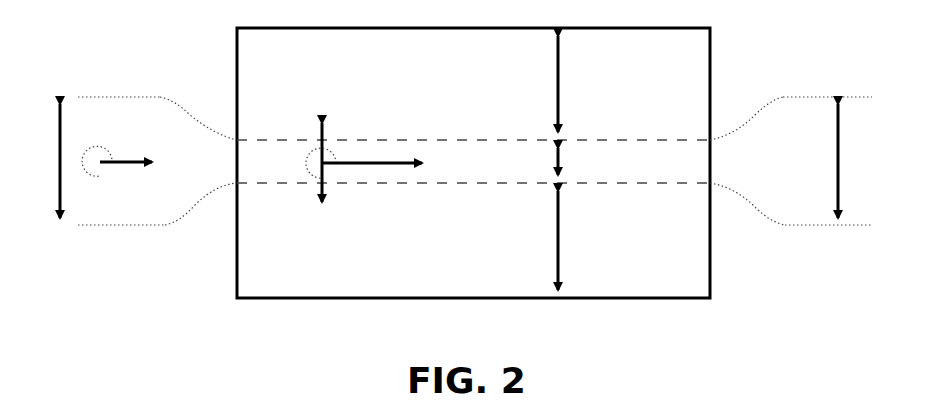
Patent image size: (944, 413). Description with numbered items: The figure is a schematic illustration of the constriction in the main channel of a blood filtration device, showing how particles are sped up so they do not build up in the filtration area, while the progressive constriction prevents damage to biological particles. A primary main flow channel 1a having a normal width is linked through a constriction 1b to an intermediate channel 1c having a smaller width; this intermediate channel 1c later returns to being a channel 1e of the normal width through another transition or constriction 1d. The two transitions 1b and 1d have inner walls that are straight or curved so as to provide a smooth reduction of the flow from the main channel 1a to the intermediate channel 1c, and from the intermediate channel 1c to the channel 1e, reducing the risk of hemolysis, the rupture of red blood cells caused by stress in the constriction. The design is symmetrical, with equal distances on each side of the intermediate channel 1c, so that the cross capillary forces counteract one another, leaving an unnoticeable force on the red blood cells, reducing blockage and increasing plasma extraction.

The primary main flow channel 1a is at (128, 228).
The constriction 1b is at (207, 193).
The intermediate channel 1c is at (473, 182).
The transition or constriction 1d is at (735, 190).
The channel 1e is at (810, 227).